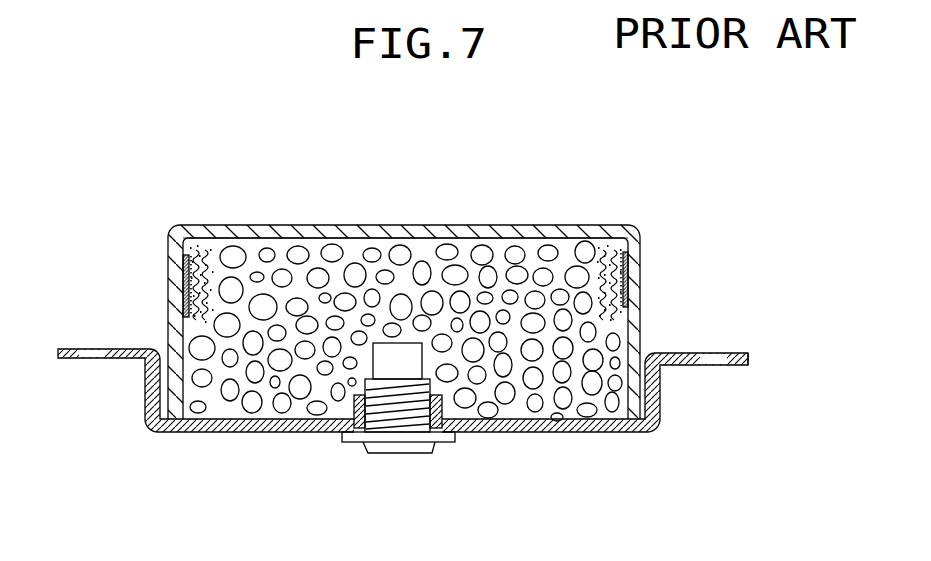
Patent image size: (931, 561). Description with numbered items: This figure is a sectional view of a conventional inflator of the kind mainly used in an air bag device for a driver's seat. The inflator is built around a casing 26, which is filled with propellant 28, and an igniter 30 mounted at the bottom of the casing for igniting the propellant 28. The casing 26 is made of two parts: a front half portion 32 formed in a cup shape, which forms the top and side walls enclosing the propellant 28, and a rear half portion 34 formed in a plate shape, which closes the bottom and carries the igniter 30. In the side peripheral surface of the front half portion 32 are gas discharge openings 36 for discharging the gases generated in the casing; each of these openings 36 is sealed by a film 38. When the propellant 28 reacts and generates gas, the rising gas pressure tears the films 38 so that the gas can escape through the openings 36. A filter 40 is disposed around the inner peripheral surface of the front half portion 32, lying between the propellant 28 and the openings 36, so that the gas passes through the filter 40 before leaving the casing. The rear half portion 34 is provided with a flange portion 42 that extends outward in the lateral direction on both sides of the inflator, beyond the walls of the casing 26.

The casing 26 is at (517, 212).
The propellant 28 is at (252, 373).
The igniter 30 is at (410, 452).
The front half portion 32 is at (410, 232).
The rear half portion 34 is at (545, 434).
The gas discharge openings 36 is at (183, 277).
The films 38 is at (187, 298).
The filter 40 is at (205, 250).
The flange portion 42 is at (687, 352).